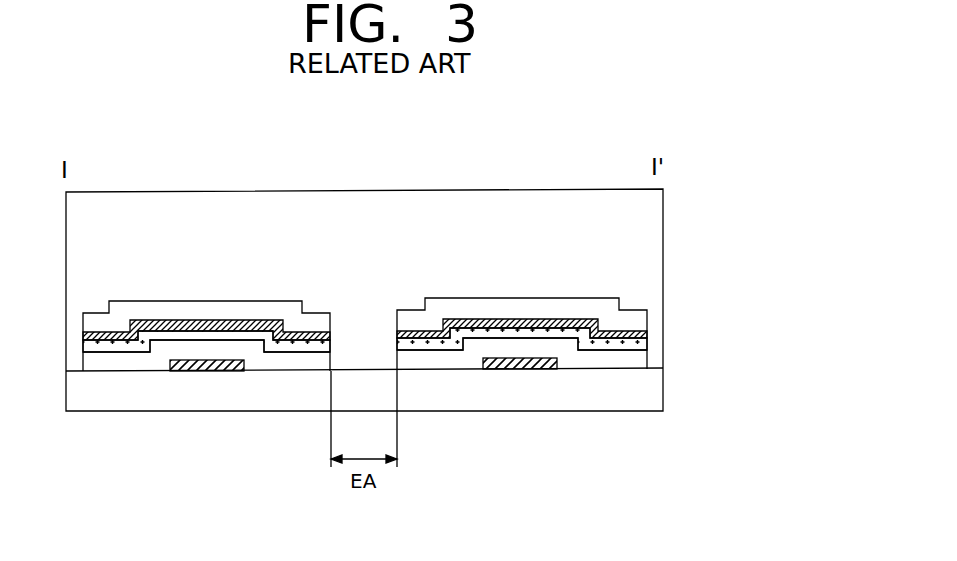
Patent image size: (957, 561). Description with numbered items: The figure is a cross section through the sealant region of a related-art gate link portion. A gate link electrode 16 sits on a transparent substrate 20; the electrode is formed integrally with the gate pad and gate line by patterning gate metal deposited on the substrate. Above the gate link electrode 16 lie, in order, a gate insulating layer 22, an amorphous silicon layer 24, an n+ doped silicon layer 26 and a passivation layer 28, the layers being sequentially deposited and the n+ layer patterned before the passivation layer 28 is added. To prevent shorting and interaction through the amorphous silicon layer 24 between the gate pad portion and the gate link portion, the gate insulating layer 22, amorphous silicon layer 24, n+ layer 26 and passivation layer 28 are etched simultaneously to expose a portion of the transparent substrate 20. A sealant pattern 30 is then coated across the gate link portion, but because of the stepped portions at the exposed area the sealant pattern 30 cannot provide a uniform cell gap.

The gate link electrode 16 is at (520, 367).
The transparent substrate 20 is at (652, 400).
The gate insulating layer 22 is at (638, 362).
The amorphous silicon layer 24 is at (640, 342).
The n+ doped silicon layer 26 is at (642, 330).
The passivation layer 28 is at (610, 306).
The sealant pattern 30 is at (648, 239).